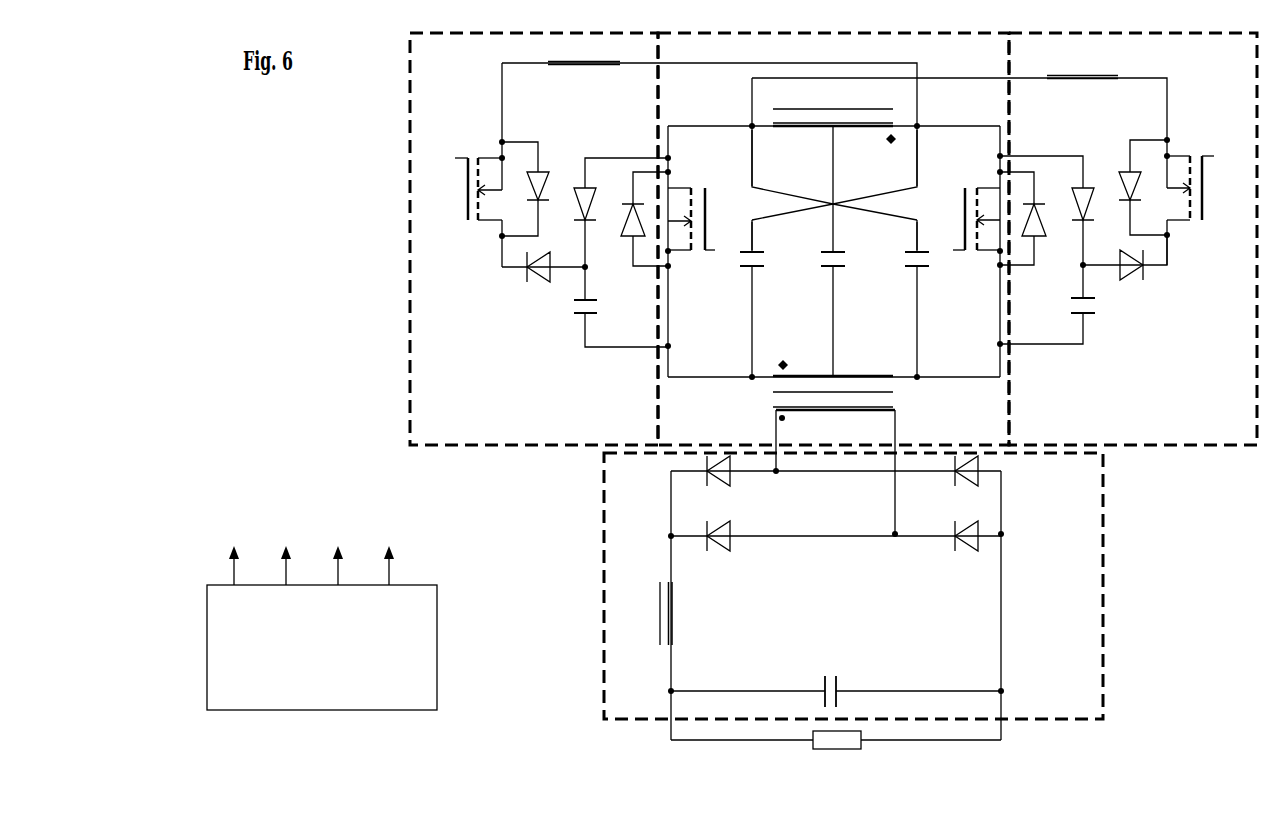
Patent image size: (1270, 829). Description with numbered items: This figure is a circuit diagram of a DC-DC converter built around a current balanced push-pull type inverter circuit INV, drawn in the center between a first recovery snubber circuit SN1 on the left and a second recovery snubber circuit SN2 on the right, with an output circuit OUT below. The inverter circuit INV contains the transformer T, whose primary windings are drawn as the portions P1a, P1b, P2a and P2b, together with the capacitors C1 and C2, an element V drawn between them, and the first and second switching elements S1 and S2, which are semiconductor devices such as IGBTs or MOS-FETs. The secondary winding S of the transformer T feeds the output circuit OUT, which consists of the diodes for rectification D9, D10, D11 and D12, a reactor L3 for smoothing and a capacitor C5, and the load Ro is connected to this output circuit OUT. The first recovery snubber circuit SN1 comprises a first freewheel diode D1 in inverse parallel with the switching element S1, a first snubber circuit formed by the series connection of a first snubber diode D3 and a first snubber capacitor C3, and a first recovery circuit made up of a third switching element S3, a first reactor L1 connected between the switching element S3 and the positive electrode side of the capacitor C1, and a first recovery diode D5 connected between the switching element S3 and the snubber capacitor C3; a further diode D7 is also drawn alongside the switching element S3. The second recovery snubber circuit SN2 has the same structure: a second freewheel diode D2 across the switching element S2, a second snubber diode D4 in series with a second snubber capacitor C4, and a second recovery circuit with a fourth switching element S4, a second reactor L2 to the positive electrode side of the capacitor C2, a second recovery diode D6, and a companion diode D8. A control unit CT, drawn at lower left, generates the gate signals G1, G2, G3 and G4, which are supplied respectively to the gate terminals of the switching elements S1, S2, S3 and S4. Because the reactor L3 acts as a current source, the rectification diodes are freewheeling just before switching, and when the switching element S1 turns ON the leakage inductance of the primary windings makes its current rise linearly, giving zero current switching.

The first recovery snubber circuit SN1 is at (528, 33).
The inverter circuit INV is at (905, 33).
The second recovery snubber circuit SN2 is at (1175, 33).
The output circuit OUT is at (1110, 607).
The control unit CT is at (310, 710).
The gate signal G1 is at (233, 555).
The gate signal G2 is at (285, 555).
The gate signal G3 is at (337, 555).
The gate signal G4 is at (388, 555).
The first reactor L1 is at (584, 53).
The second reactor L2 is at (1082, 67).
The reactor for smoothing L3 is at (646, 613).
The transformer T is at (832, 258).
The primary winding portion P1a is at (879, 158).
The primary winding portion P1b is at (780, 158).
The primary winding portion P2a is at (885, 296).
The primary winding portion P2b is at (789, 297).
The secondary winding S is at (835, 472).
The capacitor C1 is at (766, 314).
The capacitor C2 is at (901, 314).
The first snubber capacitor C3 is at (621, 318).
The second snubber capacitor C4 is at (1047, 317).
The capacitor C5 is at (846, 687).
The DC voltage source V is at (837, 314).
The first switching element S1 is at (700, 219).
The second switching element S2 is at (966, 219).
The third switching element S3 is at (464, 189).
The fourth switching element S4 is at (1204, 188).
The first freewheel diode D1 is at (644, 199).
The second freewheel diode D2 is at (1023, 199).
The first snubber diode D3 is at (620, 216).
The second snubber diode D4 is at (1049, 215).
The first recovery diode D5 is at (543, 280).
The second recovery diode D6 is at (1125, 272).
The diode D7 is at (525, 169).
The diode D8 is at (1143, 169).
The diode for rectification D9 is at (733, 477).
The diode for rectification D10 is at (944, 477).
The diode for rectification D11 is at (738, 542).
The diode for rectification D12 is at (944, 542).
The load Ro is at (837, 755).